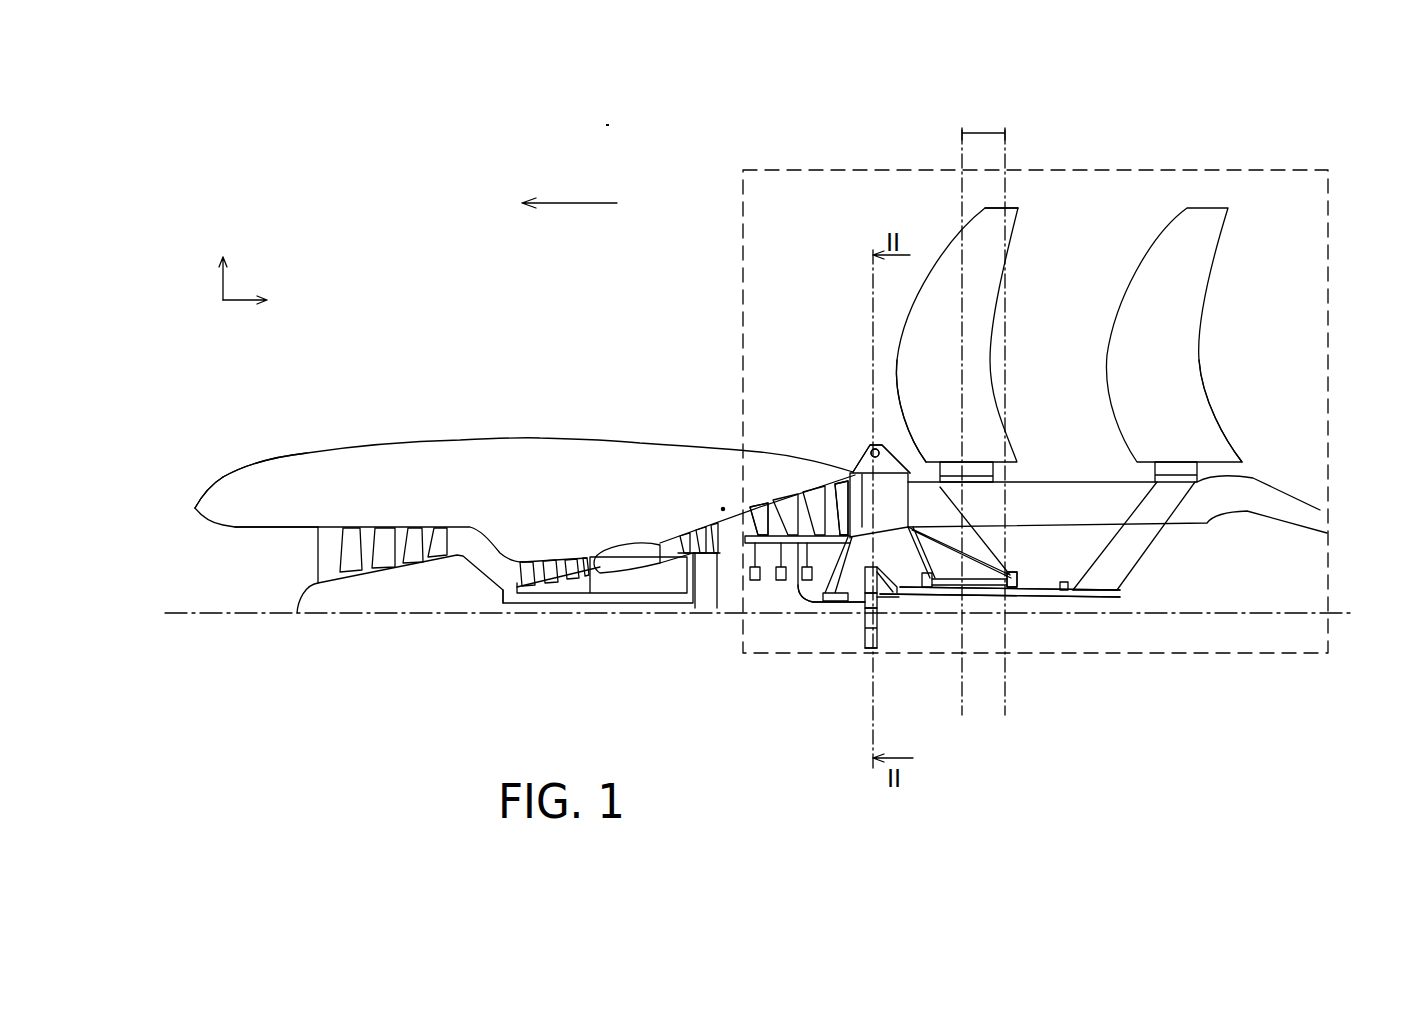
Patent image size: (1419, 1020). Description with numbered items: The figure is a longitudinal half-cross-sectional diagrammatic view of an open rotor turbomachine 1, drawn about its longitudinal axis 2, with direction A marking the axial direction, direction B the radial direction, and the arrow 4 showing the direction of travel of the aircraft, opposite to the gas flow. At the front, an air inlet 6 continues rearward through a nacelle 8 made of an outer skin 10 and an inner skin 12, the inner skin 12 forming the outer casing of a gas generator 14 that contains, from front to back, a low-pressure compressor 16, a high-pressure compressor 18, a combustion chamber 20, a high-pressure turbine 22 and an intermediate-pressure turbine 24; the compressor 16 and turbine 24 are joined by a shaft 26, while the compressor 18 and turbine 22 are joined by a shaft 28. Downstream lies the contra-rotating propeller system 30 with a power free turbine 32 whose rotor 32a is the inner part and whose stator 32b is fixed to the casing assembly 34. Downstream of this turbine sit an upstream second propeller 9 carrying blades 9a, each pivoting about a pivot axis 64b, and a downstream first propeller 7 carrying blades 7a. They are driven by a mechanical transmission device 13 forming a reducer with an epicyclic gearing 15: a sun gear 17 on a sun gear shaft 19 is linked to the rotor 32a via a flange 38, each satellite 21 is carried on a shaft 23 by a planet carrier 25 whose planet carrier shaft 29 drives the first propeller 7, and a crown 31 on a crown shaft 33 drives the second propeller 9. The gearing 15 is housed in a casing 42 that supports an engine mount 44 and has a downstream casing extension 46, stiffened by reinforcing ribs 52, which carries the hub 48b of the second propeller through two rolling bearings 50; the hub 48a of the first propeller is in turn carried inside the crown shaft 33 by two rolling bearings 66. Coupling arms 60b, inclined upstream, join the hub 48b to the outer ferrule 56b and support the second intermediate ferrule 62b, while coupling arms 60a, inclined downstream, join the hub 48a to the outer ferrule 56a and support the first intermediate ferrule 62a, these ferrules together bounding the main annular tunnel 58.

The turbomachine 1 is at (452, 338).
The longitudinal axis 2 is at (178, 618).
The direction of travel 4 is at (575, 202).
The air inlet 6 is at (195, 508).
The first propeller 7 is at (1213, 298).
The blades 7a is at (1200, 396).
The nacelle 8 is at (222, 480).
The second propeller 9 is at (1010, 280).
The blades 9a is at (1000, 243).
The outer skin 10 is at (380, 447).
The inner skin 12 is at (258, 530).
The mechanical transmission device 13 is at (860, 660).
The gas generator 14 is at (437, 628).
The epicyclic gearing 15 is at (882, 655).
The low-pressure compressor 16 is at (350, 572).
The sun gear 17 is at (867, 623).
The high-pressure compressor 18 is at (527, 583).
The sun gear shaft 19 is at (797, 612).
The combustion chamber 20 is at (633, 575).
The satellite 21 is at (863, 618).
The high-pressure turbine 22 is at (695, 560).
The satellite shaft 23 is at (887, 603).
The intermediate-pressure turbine 24 is at (717, 556).
The planet carrier 25 is at (897, 472).
The shaft 26 is at (595, 605).
The shaft 28 is at (582, 560).
The planet carrier shaft 29 is at (1000, 592).
The contra-rotating propeller system 30 is at (1233, 168).
The crown 31 is at (848, 482).
The power free turbine 32 is at (812, 470).
The rotor 32a is at (793, 505).
The stator 32b is at (835, 462).
The crown shaft 33 is at (905, 591).
The fixed casing assembly 34 is at (723, 508).
The flange 38 is at (793, 594).
The casing 42 is at (895, 462).
The engine mount 44 is at (878, 445).
The casing extension 46 is at (977, 480).
The hub of the first propeller 48a is at (1097, 597).
The hub of the second propeller 48b is at (1048, 597).
The rolling bearings 50 is at (900, 563).
The reinforcing ribs 52 is at (940, 487).
The outer ferrule 56a is at (1095, 476).
The outer ferrule 56b is at (1050, 480).
The main annular tunnel 58 is at (880, 491).
The coupling arms 60a is at (1120, 578).
The coupling arms 60b is at (1033, 597).
The first intermediate ferrule 62a is at (1155, 536).
The second intermediate ferrule 62b is at (1110, 572).
The pivot axis 64b is at (963, 340).
The rolling bearings 66 is at (900, 595).
The direction A is at (245, 305).
The direction B is at (222, 273).